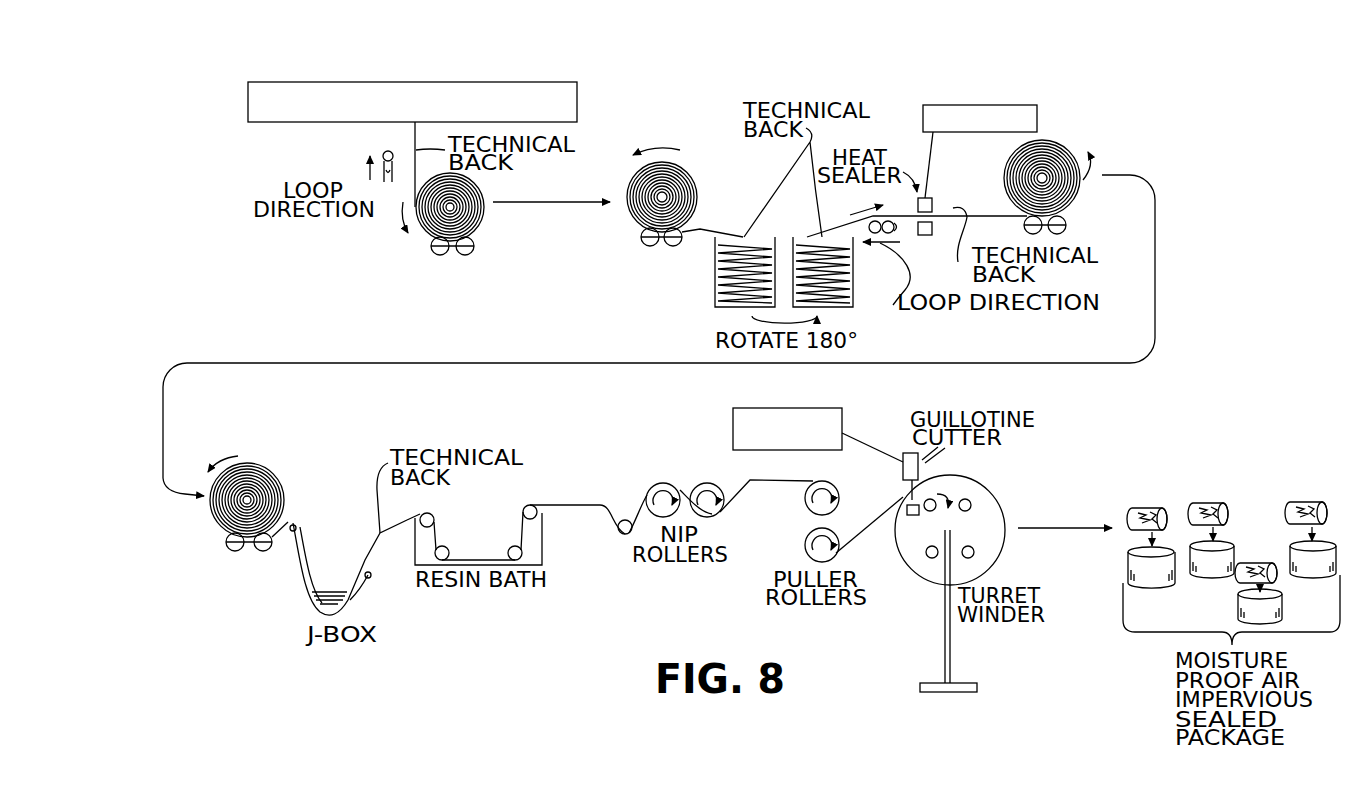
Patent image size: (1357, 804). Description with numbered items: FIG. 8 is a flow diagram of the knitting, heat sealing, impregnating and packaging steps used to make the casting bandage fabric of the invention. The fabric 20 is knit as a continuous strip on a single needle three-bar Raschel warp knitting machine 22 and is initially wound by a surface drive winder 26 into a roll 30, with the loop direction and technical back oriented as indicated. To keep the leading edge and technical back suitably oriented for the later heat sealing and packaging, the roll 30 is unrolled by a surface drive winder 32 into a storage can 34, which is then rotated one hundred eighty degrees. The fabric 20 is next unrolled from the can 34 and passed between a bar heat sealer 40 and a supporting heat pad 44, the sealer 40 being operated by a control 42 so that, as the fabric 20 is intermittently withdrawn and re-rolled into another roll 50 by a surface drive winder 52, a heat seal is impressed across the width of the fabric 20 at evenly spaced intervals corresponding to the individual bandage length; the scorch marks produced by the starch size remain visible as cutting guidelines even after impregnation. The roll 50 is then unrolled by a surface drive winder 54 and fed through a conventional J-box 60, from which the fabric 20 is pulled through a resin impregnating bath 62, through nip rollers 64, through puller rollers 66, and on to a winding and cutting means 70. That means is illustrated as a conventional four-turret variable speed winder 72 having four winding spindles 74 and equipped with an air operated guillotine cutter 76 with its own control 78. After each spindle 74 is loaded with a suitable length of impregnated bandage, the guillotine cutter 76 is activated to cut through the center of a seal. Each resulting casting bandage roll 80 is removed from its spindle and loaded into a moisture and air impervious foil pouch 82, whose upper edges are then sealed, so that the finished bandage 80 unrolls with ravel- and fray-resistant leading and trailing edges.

The fabric 20 is at (414, 128).
The warp knitting machine 22 is at (248, 100).
The surface drive winder 26 is at (475, 248).
The roll 30 is at (487, 197).
The surface drive winder 32 is at (668, 247).
The storage can 34 is at (715, 297).
The bar heat sealer 40 is at (932, 204).
The control 42 is at (925, 236).
The supporting heat pad 44 is at (1037, 108).
The roll 50 is at (1065, 145).
The surface drive winder 52 is at (1067, 225).
The surface drive winder 54 is at (263, 552).
The J-box 60 is at (305, 585).
The resin impregnating bath 62 is at (542, 550).
The nip rollers 64 is at (688, 485).
The puller rollers 66 is at (812, 519).
The winding and cutting means 70 is at (997, 485).
The turret winder 72 is at (975, 552).
The winding spindle 74 is at (972, 505).
The guillotine cutter 76 is at (920, 470).
The control 78 is at (733, 418).
The casting bandage roll 80 is at (1150, 508).
The foil pouch 82 is at (1160, 578).